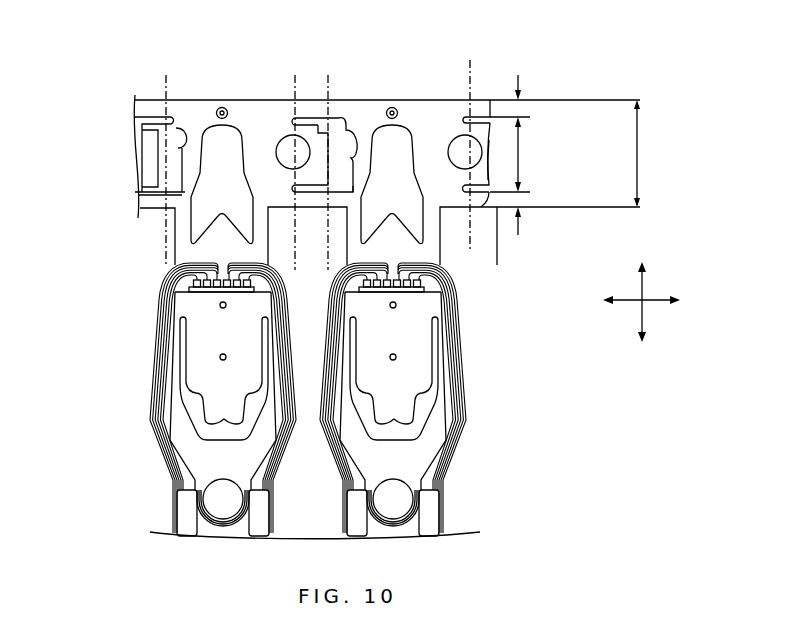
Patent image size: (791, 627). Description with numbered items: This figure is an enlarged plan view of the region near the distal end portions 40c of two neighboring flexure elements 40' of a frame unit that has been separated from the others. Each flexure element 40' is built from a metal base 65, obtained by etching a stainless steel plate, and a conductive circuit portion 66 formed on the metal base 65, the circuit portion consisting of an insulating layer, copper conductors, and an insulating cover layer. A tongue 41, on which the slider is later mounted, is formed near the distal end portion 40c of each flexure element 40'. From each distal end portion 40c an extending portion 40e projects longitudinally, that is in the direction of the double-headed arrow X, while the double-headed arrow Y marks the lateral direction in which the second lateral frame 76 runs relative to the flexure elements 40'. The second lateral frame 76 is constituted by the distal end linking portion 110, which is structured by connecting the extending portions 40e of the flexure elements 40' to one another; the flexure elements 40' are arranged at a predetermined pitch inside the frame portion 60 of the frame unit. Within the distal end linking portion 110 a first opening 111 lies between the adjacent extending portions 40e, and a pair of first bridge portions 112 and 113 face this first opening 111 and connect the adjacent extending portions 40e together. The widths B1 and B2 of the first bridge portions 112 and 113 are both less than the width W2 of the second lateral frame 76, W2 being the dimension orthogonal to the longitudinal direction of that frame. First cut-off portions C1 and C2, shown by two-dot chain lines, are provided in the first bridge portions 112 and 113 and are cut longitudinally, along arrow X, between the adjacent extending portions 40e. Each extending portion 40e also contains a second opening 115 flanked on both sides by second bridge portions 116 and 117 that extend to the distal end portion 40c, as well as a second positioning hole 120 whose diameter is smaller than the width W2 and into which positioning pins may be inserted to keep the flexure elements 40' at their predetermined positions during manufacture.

The frame portion 60 is at (104, 150).
The distal end linking portion 110 is at (322, 150).
The first opening 111 is at (178, 130).
The first bridge portion 112 is at (141, 104).
The first bridge portion 113 is at (150, 212).
The second opening 115 is at (205, 122).
The second bridge portion 116 is at (252, 198).
The second bridge portion 117 is at (192, 208).
The second positioning hole 120 is at (287, 143).
The second lateral frame 76 is at (496, 152).
The extending portion 40e is at (251, 152).
The distal end portion 40c is at (162, 258).
The flexure element 40' is at (311, 509).
The tongue 41 is at (202, 360).
The metal base 65 is at (437, 262).
The conductive circuit portion 66 is at (152, 347).
The first cut-off portion C1 is at (476, 268).
The first cut-off portion C2 is at (143, 257).
The width of first bridge portion B1 is at (524, 112).
The width of first bridge portion B2 is at (522, 203).
The width of second lateral frame W2 is at (640, 157).
The longitudinal direction arrow X is at (644, 313).
The lateral direction arrow Y is at (622, 305).